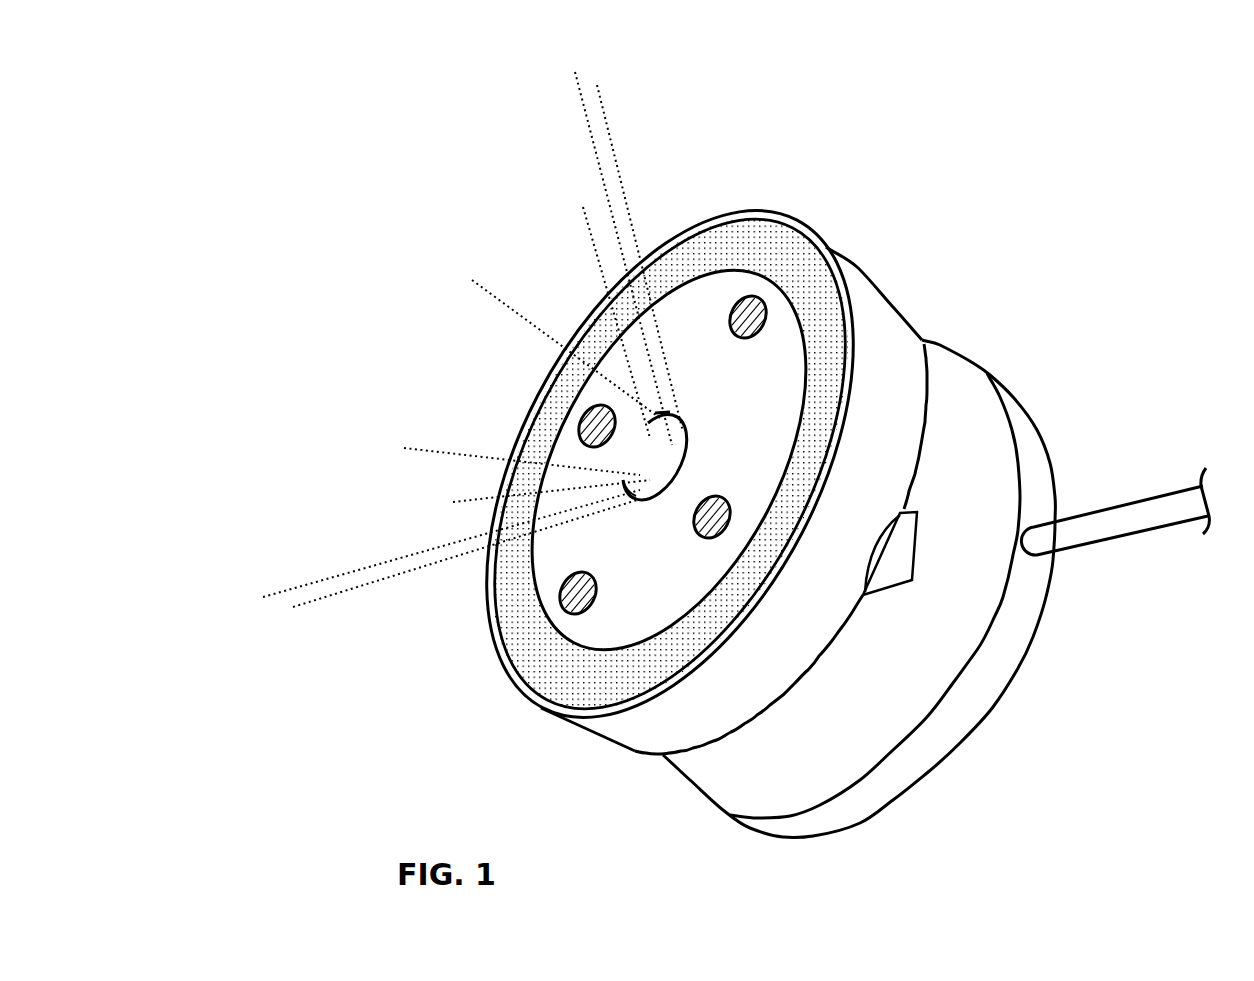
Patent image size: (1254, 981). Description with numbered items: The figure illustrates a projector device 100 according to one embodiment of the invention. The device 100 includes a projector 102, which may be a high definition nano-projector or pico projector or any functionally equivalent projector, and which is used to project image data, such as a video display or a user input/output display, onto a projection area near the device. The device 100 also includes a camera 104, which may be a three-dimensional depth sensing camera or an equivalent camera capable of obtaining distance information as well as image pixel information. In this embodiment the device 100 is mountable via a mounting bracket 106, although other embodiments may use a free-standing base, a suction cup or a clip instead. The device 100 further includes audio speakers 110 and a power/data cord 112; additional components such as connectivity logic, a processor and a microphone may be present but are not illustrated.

The projector device 100 is at (999, 193).
The projector 102 is at (637, 445).
The camera 104 is at (583, 573).
The mounting bracket 106 is at (1000, 413).
The audio speakers 110 is at (537, 677).
The power/data cord 112 is at (1133, 517).